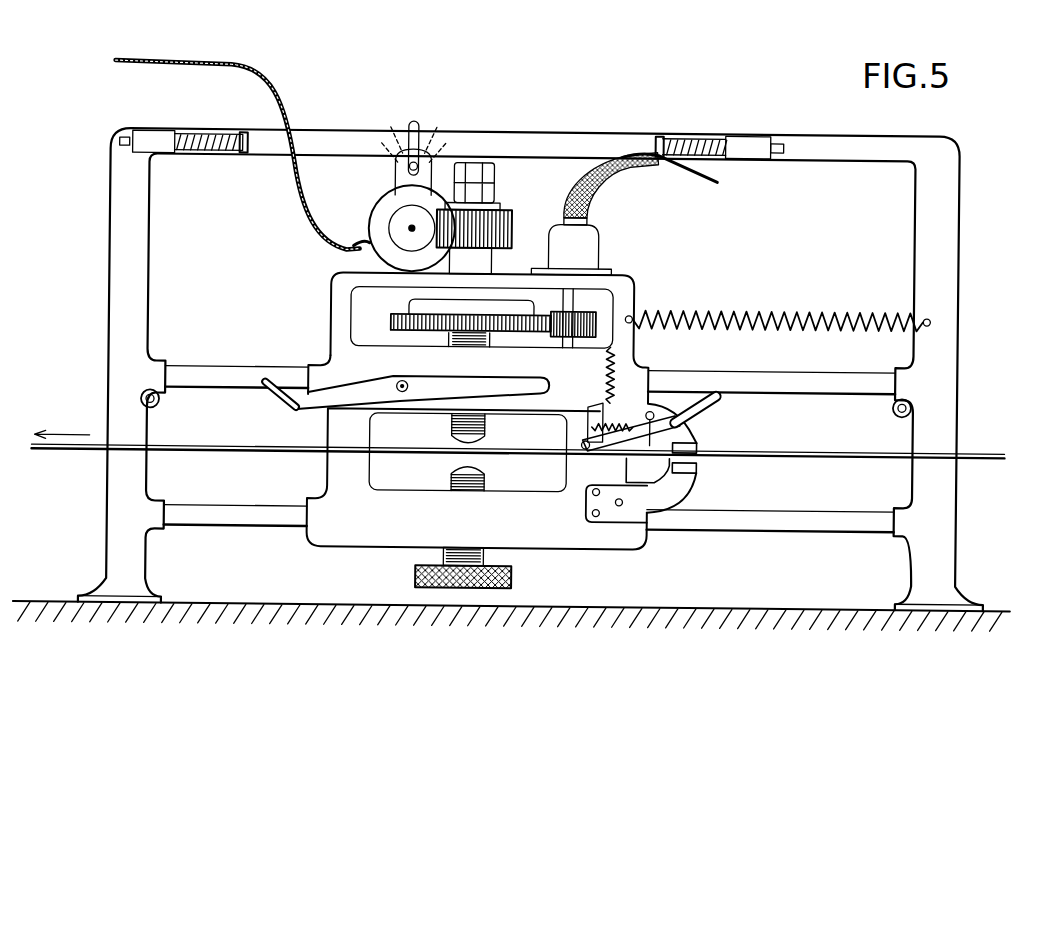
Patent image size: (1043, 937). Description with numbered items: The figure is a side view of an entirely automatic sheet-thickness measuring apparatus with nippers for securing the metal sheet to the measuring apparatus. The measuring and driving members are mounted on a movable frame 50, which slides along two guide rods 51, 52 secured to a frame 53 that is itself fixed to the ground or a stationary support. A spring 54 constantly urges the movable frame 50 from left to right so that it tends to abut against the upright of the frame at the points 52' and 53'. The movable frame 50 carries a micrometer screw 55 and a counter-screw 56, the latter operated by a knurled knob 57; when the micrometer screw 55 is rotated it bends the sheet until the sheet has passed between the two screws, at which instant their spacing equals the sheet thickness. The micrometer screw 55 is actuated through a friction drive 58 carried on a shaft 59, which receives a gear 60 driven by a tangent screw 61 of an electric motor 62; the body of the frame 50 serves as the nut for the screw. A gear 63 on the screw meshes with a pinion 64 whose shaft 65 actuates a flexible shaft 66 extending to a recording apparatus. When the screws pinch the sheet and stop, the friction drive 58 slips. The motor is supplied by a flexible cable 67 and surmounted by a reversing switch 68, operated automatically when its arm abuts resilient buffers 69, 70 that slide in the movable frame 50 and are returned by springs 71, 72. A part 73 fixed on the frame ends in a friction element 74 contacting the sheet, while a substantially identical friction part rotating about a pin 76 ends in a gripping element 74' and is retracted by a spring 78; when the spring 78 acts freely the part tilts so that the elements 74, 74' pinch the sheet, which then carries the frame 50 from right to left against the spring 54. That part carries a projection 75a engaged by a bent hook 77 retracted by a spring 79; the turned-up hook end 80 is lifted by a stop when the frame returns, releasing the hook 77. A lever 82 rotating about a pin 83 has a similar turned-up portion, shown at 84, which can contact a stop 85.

The movable frame 50 is at (505, 358).
The guide rod 51 is at (230, 518).
The guide rod 52 is at (237, 349).
The abutment point 52' is at (774, 404).
The frame 53 is at (536, 369).
The abutment point 53' is at (773, 542).
The spring 54 is at (752, 312).
The micrometer screw 55 is at (472, 428).
The counter-screw 56 is at (462, 470).
The knurled knob 57 is at (518, 580).
The friction drive 58 is at (478, 316).
The shaft 59 is at (470, 261).
The gear 60 is at (496, 230).
The tangent screw 61 is at (409, 228).
The electric motor 62 is at (384, 212).
The gear 63 is at (392, 320).
The pinion 64 is at (596, 329).
The shaft 65 is at (598, 312).
The flexible shaft 66 is at (712, 182).
The flexible cable 67 is at (300, 204).
The reversing switch 68 is at (412, 120).
The resilient buffer 69 is at (243, 136).
The resilient buffer 70 is at (659, 132).
The spring 71 is at (198, 160).
The spring 72 is at (698, 134).
The fixed part 73 is at (638, 497).
The friction element 74 is at (712, 476).
The gripping element 74' is at (709, 446).
The projection 75a is at (621, 424).
The pin 76 is at (630, 438).
The bent hook 77 is at (640, 455).
The spring 78 is at (614, 380).
The spring 79 is at (590, 432).
The hook end 80 is at (697, 402).
The lever 82 is at (441, 374).
The pin 83 is at (399, 380).
The lever arm 84 is at (270, 383).
The stop 85 is at (160, 402).